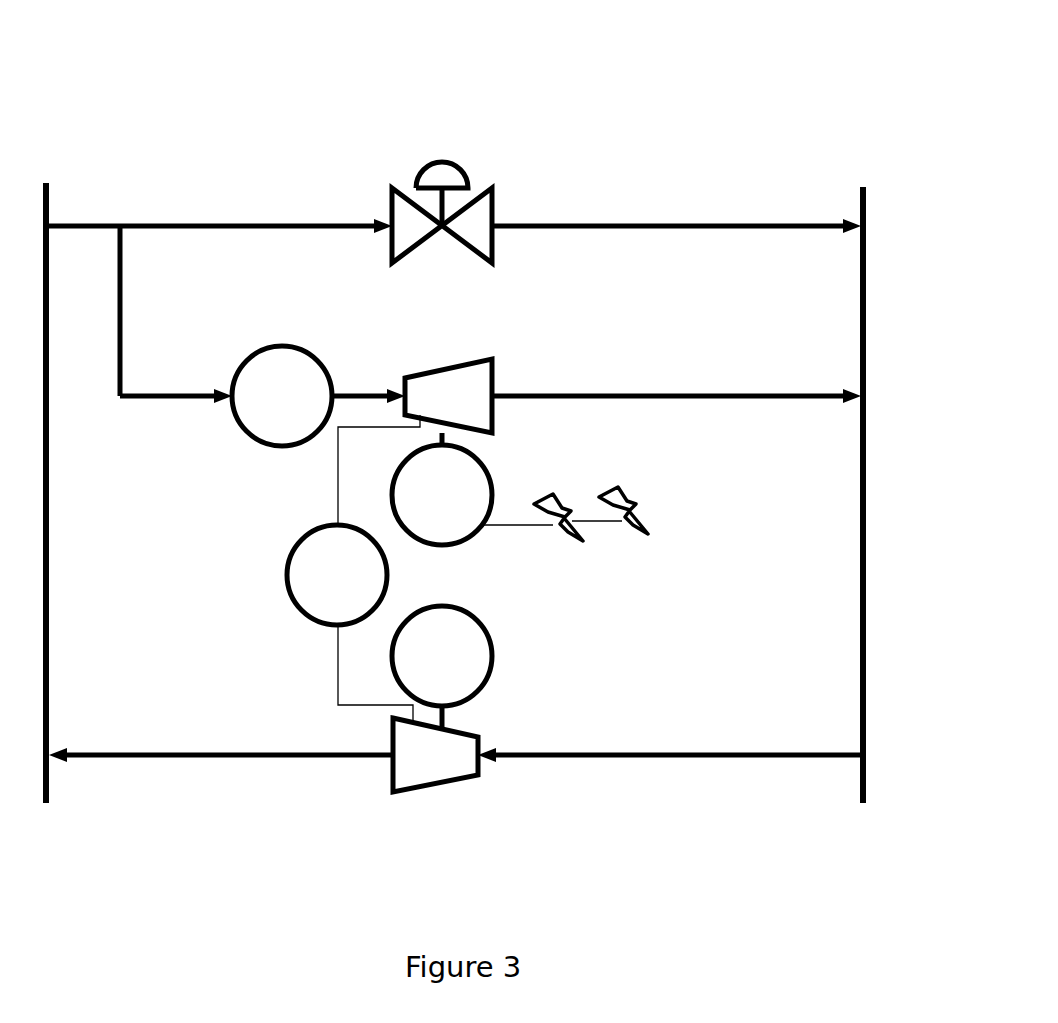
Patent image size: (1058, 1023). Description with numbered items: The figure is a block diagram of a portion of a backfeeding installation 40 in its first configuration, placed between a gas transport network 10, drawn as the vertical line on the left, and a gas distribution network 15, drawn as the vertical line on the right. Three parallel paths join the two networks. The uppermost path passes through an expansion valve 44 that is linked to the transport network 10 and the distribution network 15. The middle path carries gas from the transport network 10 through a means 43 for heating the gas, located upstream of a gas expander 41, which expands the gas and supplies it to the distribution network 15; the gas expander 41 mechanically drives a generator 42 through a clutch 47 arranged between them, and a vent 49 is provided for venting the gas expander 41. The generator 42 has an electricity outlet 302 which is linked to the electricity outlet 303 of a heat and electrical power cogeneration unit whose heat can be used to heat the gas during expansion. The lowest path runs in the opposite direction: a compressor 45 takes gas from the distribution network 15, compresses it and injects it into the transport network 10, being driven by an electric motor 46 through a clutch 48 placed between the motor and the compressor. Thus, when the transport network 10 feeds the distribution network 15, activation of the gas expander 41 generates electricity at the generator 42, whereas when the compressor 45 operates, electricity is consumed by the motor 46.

The transport network 10 is at (49, 630).
The distribution network 15 is at (866, 322).
The backfeeding installation 40 is at (590, 105).
The gas expander 41 is at (468, 383).
The generator 42 is at (468, 497).
The means for heating the gas 43 is at (268, 423).
The expansion valve 44 is at (404, 222).
The compressor 45 is at (430, 768).
The electric motor 46 is at (468, 643).
The clutch 47 is at (438, 428).
The clutch 48 is at (447, 717).
The vent 49 is at (368, 605).
The electricity outlet of the generator 302 is at (568, 540).
The electricity outlet of the cogeneration unit 303 is at (640, 532).